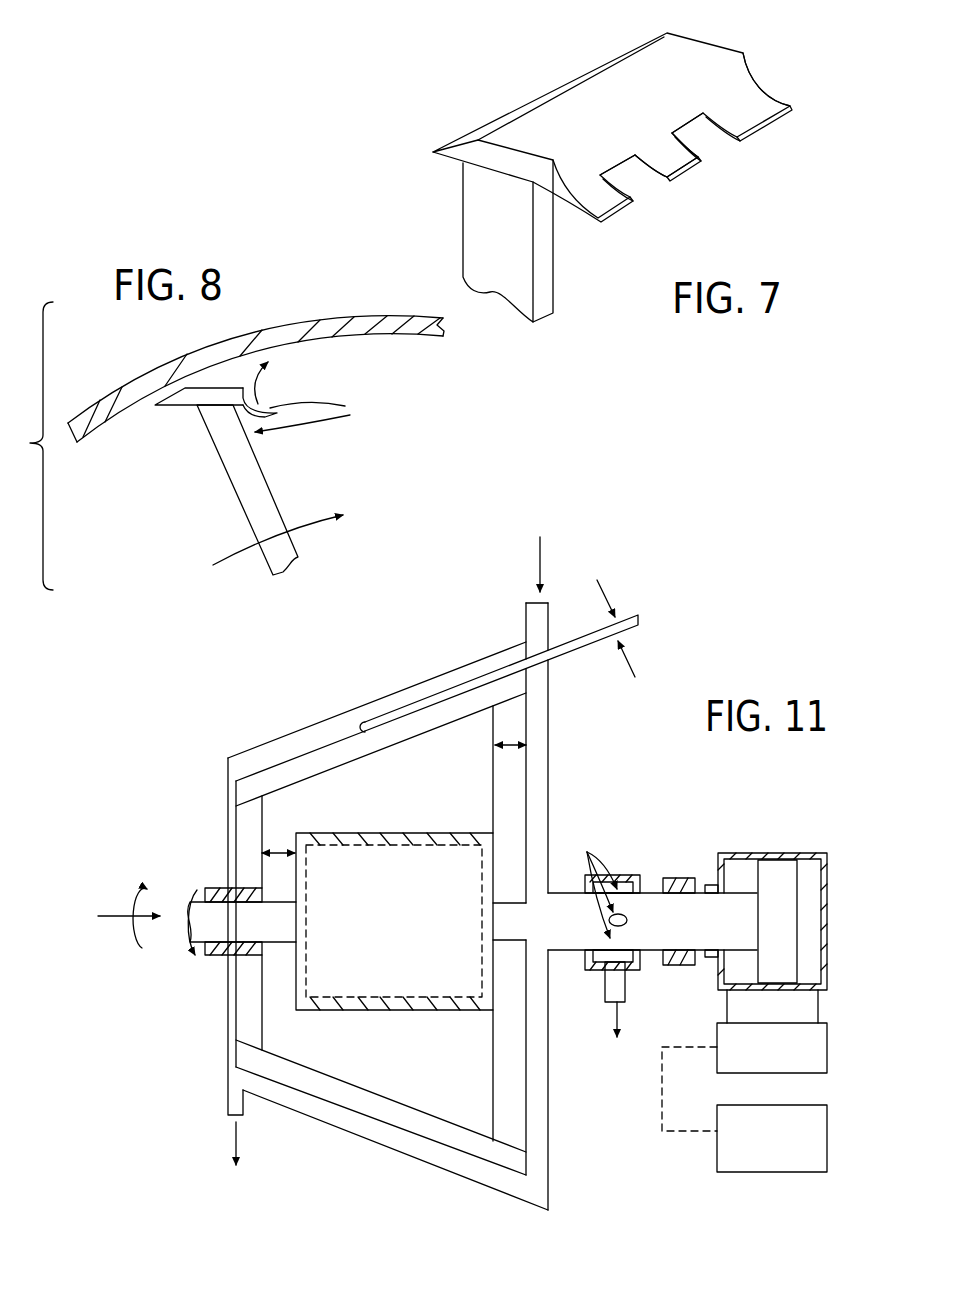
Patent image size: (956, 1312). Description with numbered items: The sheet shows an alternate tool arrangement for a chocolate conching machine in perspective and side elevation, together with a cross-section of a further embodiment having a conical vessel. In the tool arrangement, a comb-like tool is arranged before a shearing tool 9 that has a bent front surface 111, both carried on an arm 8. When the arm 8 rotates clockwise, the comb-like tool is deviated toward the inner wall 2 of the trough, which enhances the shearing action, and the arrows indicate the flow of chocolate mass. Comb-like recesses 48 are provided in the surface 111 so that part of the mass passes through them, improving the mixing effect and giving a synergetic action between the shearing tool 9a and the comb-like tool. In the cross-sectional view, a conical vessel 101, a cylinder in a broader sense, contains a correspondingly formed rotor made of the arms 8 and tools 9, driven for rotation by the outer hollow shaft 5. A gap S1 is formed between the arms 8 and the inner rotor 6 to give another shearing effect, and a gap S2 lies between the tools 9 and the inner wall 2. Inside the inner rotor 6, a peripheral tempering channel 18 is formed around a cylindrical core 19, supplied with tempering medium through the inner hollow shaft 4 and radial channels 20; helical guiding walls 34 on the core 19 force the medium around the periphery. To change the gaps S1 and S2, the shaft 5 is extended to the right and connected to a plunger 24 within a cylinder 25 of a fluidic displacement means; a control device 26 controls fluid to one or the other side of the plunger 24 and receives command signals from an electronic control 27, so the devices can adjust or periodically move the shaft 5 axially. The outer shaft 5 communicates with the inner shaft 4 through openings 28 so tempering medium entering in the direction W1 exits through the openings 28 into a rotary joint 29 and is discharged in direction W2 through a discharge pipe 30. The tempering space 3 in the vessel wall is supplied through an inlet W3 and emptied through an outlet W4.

In FIG. 8, the inner wall 2 is at (103, 427).
In FIG. 11, the inner wall 2 is at (363, 720).
In FIG. 11, the tempering space 3 is at (463, 673).
In FIG. 11, the hollow shaft 4 is at (185, 905).
In FIG. 11, the hollow shaft 5 is at (213, 885).
In FIG. 11, the inner rotor 6 is at (412, 832).
In FIG. 7, the arm 8 is at (482, 227).
In FIG. 8, the arm 8 is at (250, 495).
In FIG. 11, the arm 8 is at (540, 717).
In FIG. 11, the shearing tool 9 is at (330, 760).
In FIG. 7, the shearing tool 9a is at (550, 122).
In FIG. 8, the shearing tool 9a is at (183, 407).
In FIG. 11, the shearing tool 9a is at (403, 1113).
In FIG. 11, the tempering channel 18 is at (363, 833).
In FIG. 11, the core 19 is at (408, 962).
In FIG. 11, the radial channels 20 is at (487, 850).
In FIG. 11, the plunger 24 is at (778, 893).
In FIG. 11, the cylinder 25 is at (740, 880).
In FIG. 11, the control device 26 is at (757, 1058).
In FIG. 11, the electronic control 27 is at (757, 1145).
In FIG. 11, the openings 28 is at (589, 888).
In FIG. 11, the rotary joint 29 is at (625, 875).
In FIG. 11, the discharge pipe 30 is at (625, 987).
In FIG. 11, the helical guiding walls 34 is at (335, 1007).
In FIG. 7, the comb-like recesses 48 is at (638, 185).
In FIG. 11, the vessel 101 is at (402, 690).
In FIG. 7, the bent front surface 111 is at (745, 83).
In FIG. 8, the bent front surface 111 is at (260, 400).
In FIG. 11, the gap S1 is at (510, 728).
In FIG. 11, the gap S2 is at (619, 626).
In FIG. 11, the arrow W1 is at (112, 914).
In FIG. 11, the arrow W2 is at (607, 1015).
In FIG. 11, the inlet W3 is at (538, 557).
In FIG. 11, the outlet W4 is at (233, 1143).